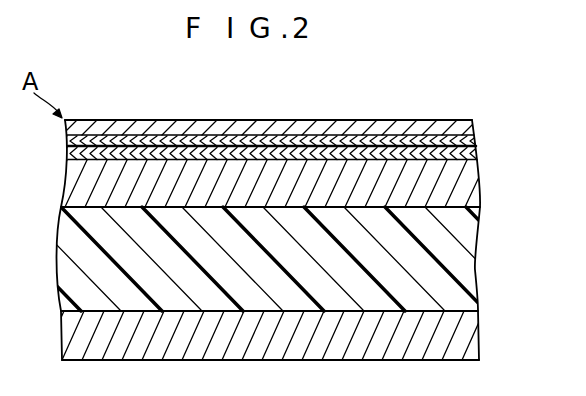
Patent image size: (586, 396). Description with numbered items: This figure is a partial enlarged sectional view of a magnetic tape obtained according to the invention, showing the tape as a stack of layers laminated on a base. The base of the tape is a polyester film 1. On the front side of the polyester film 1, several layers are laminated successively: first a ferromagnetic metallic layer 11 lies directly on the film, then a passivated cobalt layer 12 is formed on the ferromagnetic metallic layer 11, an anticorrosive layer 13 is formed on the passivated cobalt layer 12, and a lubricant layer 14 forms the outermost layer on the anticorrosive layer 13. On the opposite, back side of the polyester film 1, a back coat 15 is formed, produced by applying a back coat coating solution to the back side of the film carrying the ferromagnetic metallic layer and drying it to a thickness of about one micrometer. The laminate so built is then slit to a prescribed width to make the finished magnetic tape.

The polyester film 1 is at (463, 262).
The ferromagnetic metallic layer 11 is at (474, 188).
The passivated cobalt layer 12 is at (476, 152).
The anticorrosive layer 13 is at (475, 140).
The lubricant layer 14 is at (473, 126).
The back coat 15 is at (473, 335).